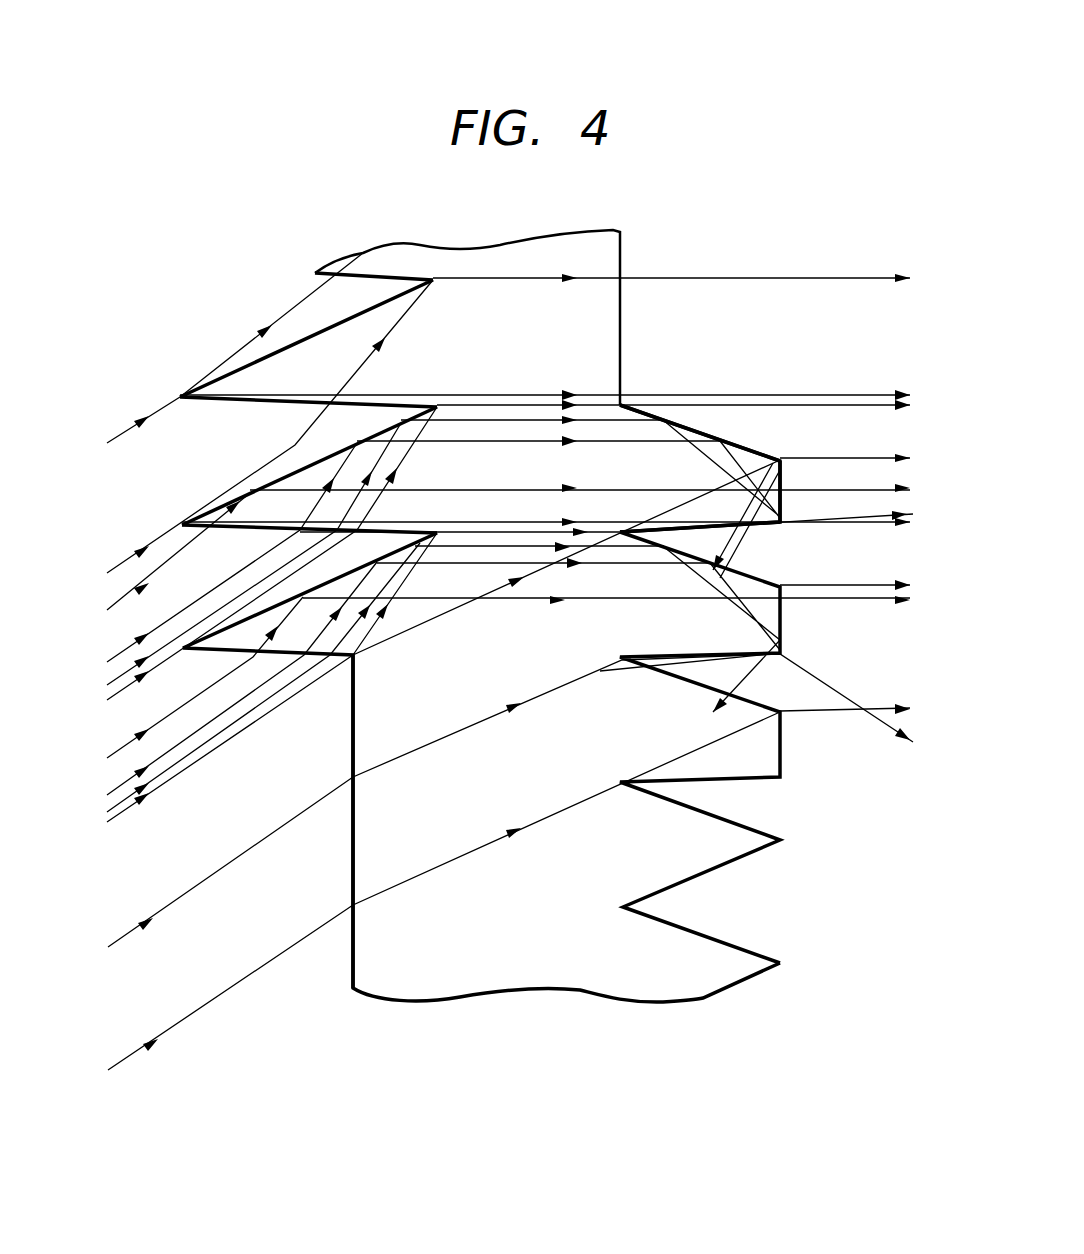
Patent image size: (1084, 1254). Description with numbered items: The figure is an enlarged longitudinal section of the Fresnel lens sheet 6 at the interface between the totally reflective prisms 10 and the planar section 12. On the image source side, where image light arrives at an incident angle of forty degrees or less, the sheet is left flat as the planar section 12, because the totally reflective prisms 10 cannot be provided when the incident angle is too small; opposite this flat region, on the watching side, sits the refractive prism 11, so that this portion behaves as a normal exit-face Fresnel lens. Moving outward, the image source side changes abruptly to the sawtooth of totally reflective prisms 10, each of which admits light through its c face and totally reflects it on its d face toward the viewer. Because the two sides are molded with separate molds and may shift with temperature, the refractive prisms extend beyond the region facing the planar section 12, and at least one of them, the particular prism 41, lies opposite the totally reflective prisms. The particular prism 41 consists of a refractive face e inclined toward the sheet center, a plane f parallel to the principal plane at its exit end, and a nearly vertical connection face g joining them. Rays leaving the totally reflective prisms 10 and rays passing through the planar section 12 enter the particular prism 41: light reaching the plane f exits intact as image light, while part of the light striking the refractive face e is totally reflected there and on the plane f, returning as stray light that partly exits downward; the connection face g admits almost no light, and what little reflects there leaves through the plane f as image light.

The totally reflective prism 10 is at (263, 377).
The particular prism 41 is at (700, 460).
The refractive prism 11 is at (748, 837).
The planar section 12 is at (352, 942).
The Fresnel lens sheet 6 is at (527, 960).
The c face c is at (250, 528).
The d face d is at (298, 467).
The refractive face e is at (755, 452).
The plane f is at (782, 477).
The connection face g is at (722, 530).